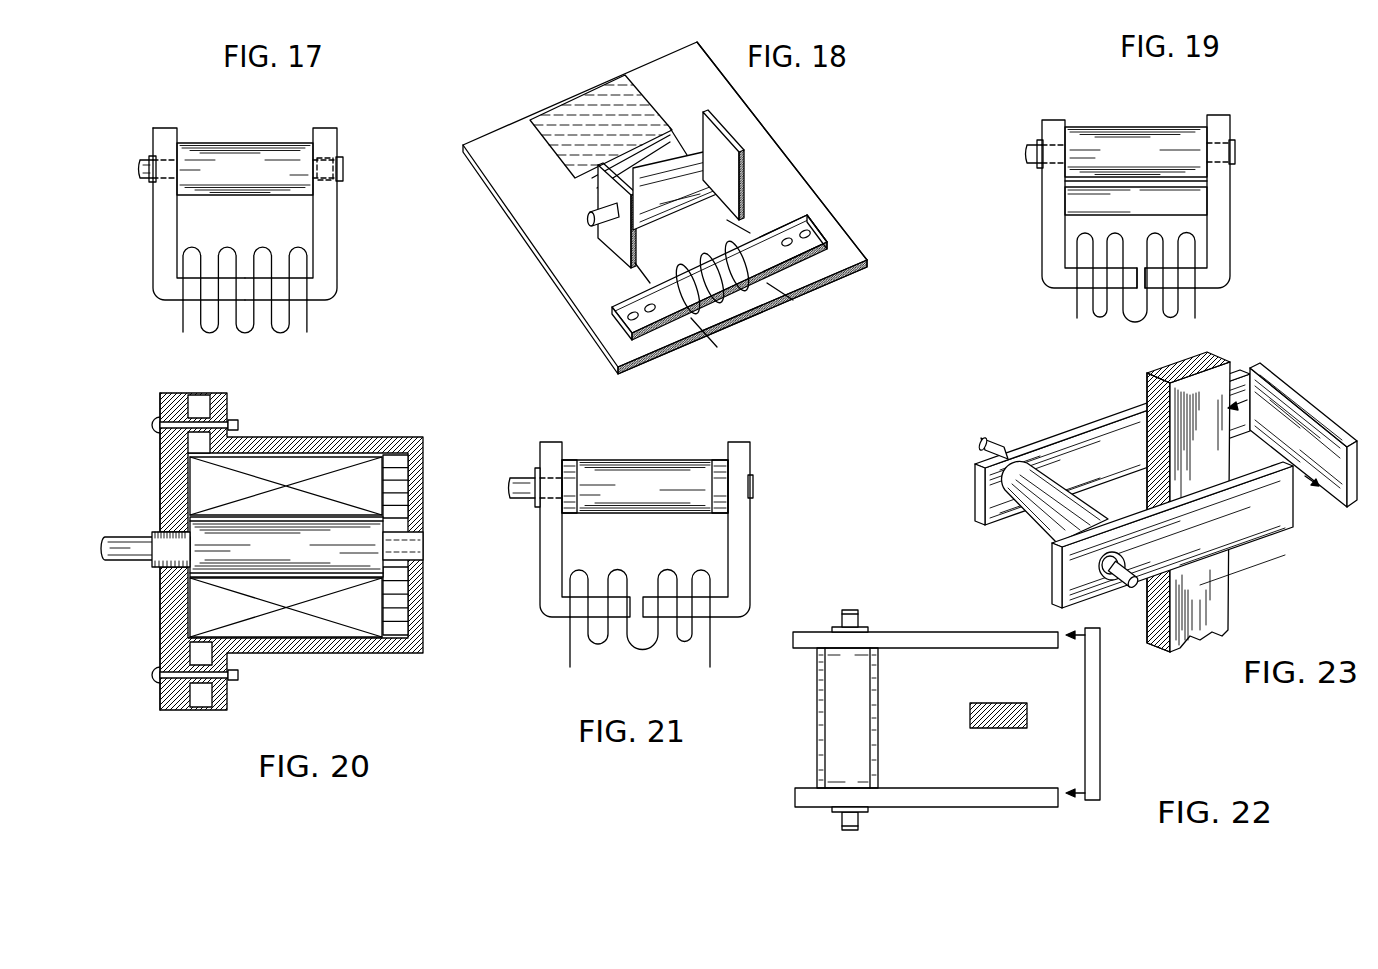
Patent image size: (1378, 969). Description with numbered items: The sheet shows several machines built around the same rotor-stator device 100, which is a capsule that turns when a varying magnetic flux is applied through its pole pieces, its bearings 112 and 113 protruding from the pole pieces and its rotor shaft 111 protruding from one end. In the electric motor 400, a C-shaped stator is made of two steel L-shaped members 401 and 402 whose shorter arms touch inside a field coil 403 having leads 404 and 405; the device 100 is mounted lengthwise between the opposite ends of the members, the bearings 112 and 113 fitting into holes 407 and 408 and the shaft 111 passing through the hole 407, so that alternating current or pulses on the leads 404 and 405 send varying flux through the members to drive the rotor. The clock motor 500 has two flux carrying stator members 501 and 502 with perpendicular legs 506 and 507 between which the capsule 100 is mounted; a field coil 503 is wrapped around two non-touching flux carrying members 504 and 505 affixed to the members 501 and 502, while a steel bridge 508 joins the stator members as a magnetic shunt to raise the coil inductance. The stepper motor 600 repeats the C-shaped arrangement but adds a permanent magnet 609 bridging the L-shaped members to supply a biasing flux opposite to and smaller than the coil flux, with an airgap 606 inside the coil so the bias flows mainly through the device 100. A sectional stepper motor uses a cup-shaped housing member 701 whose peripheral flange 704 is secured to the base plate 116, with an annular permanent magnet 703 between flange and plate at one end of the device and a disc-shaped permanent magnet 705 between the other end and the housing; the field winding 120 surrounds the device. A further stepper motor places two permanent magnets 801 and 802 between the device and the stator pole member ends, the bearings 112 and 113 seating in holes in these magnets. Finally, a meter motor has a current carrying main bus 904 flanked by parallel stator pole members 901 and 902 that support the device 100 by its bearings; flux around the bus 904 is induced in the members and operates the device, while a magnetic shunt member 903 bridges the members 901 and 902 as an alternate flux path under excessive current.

In FIG. 17, the rotor-stator device 100 is at (268, 178).
In FIG. 18, the rotor-stator device 100 is at (690, 184).
In FIG. 19, the rotor-stator device 100 is at (1136, 152).
In FIG. 20, the rotor-stator device 100 is at (312, 555).
In FIG. 21, the rotor-stator device 100 is at (670, 495).
In FIG. 22, the rotor-stator device 100 is at (870, 729).
In FIG. 23, the rotor-stator device 100 is at (1032, 528).
In FIG. 17, the rotor shaft 111 is at (138, 175).
In FIG. 19, the rotor shaft 111 is at (1027, 153).
In FIG. 20, the rotor shaft 111 is at (115, 565).
In FIG. 21, the rotor shaft 111 is at (522, 488).
In FIG. 22, the rotor shaft 111 is at (858, 828).
In FIG. 23, the rotor shaft 111 is at (1135, 593).
In FIG. 17, the bearing 112 is at (183, 140).
In FIG. 19, the bearing 112 is at (1042, 140).
In FIG. 20, the bearing 112 is at (163, 568).
In FIG. 21, the bearing 112 is at (538, 468).
In FIG. 22, the bearing 112 is at (860, 628).
In FIG. 23, the bearing 112 is at (1123, 557).
In FIG. 17, the bearing 113 is at (333, 143).
In FIG. 19, the bearing 113 is at (1215, 140).
In FIG. 20, the bearing 113 is at (408, 531).
In FIG. 21, the bearing 113 is at (752, 470).
In FIG. 22, the bearing 113 is at (835, 808).
In FIG. 20, the base plate 116 is at (165, 625).
In FIG. 20, the coil winding 120 is at (362, 473).
In FIG. 17, the electric motor 400 is at (245, 218).
In FIG. 17, the L-shaped member 401 is at (170, 235).
In FIG. 19, the L-shaped member 401 is at (1058, 225).
In FIG. 21, the L-shaped member 401 is at (557, 557).
In FIG. 17, the L-shaped member 402 is at (330, 232).
In FIG. 19, the L-shaped member 402 is at (1222, 264).
In FIG. 21, the L-shaped member 402 is at (743, 544).
In FIG. 17, the field coil 403 is at (209, 333).
In FIG. 19, the field coil 403 is at (1093, 313).
In FIG. 21, the field coil 403 is at (598, 644).
In FIG. 17, the lead 404 is at (185, 322).
In FIG. 19, the lead 404 is at (1077, 300).
In FIG. 21, the lead 404 is at (574, 648).
In FIG. 17, the lead 405 is at (309, 330).
In FIG. 19, the lead 405 is at (1197, 312).
In FIG. 21, the lead 405 is at (711, 653).
In FIG. 17, the hole 407 is at (153, 187).
In FIG. 19, the hole 407 is at (1040, 168).
In FIG. 17, the hole 408 is at (338, 167).
In FIG. 19, the hole 408 is at (1233, 140).
In FIG. 18, the clock motor 500 is at (679, 208).
In FIG. 18, the flux carrying stator member 501 is at (548, 257).
In FIG. 18, the flux carrying stator member 502 is at (788, 157).
In FIG. 18, the field coil 503 is at (725, 307).
In FIG. 18, the flux carrying member 504 is at (612, 336).
In FIG. 18, the flux carrying member 505 is at (828, 229).
In FIG. 18, the leg 506 is at (607, 187).
In FIG. 18, the leg 507 is at (728, 145).
In FIG. 18, the steel bridge 508 is at (590, 97).
In FIG. 19, the stepper motor 600 is at (1140, 238).
In FIG. 19, the airgap 606 is at (1140, 288).
In FIG. 19, the permanent magnet 609 is at (1203, 197).
In FIG. 20, the cup-shaped housing member 701 is at (391, 657).
In FIG. 20, the annular permanent magnet 703 is at (200, 393).
In FIG. 20, the peripheral flange 704 is at (230, 697).
In FIG. 20, the permanent magnet 705 is at (403, 593).
In FIG. 21, the permanent magnet 801 is at (568, 462).
In FIG. 21, the permanent magnet 802 is at (720, 460).
In FIG. 22, the stator pole member 901 is at (943, 638).
In FIG. 23, the stator pole member 901 is at (1262, 535).
In FIG. 22, the stator pole member 902 is at (1022, 803).
In FIG. 23, the stator pole member 902 is at (1070, 430).
In FIG. 22, the magnetic shunt member 903 is at (1102, 748).
In FIG. 23, the magnetic shunt member 903 is at (1293, 393).
In FIG. 22, the main bus 904 is at (993, 703).
In FIG. 23, the main bus 904 is at (1218, 356).